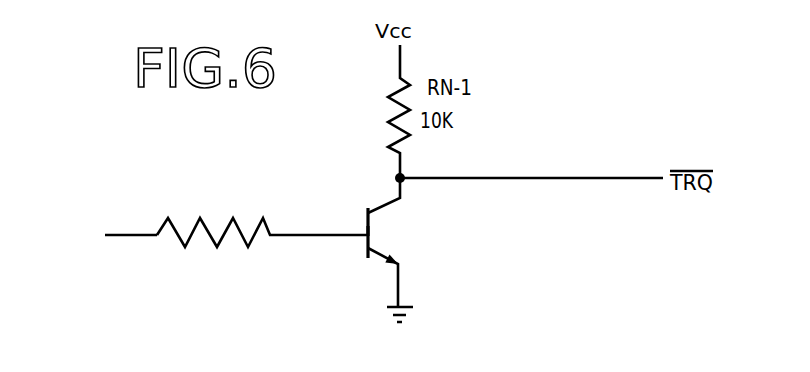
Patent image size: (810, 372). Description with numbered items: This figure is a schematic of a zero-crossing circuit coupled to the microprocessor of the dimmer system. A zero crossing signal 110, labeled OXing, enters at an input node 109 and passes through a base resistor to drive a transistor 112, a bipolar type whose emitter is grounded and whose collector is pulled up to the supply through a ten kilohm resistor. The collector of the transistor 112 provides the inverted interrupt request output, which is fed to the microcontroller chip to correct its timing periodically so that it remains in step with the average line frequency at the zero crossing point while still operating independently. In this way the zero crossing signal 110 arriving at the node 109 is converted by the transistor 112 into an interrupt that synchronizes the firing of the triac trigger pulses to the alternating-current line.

The input node (OXing signal) 109 is at (142, 236).
The zero crossing signal 110 is at (183, 213).
The transistor 112 is at (371, 230).